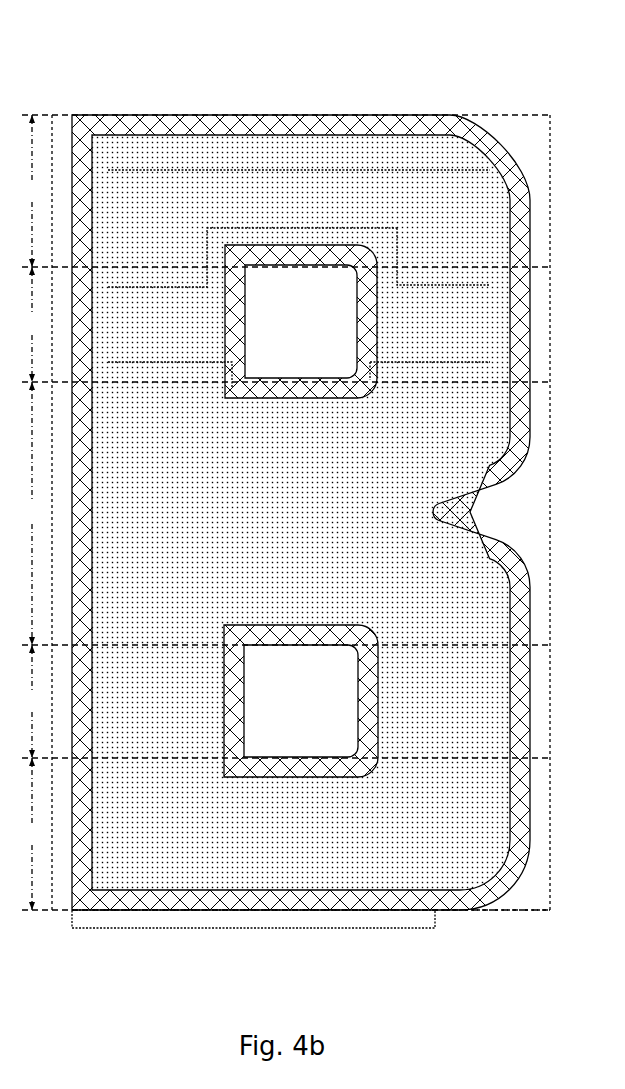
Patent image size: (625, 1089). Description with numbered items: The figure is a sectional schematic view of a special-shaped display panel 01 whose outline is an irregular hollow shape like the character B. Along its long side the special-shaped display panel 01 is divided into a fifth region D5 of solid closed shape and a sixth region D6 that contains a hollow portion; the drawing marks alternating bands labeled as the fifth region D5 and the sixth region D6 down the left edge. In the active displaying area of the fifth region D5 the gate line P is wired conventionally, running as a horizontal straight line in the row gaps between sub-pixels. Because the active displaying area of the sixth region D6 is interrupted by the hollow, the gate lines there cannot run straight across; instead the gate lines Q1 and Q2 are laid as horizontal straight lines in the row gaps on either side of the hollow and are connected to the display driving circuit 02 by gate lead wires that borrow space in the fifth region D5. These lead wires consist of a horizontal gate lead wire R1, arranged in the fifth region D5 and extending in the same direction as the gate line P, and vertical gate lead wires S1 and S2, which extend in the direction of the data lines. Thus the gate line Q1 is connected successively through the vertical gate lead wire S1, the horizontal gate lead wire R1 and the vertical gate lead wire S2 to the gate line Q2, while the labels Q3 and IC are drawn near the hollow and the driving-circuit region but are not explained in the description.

The special-shaped display panel 01 is at (306, 114).
The display driving circuit 02 is at (398, 930).
The gate line P is at (310, 168).
The gate line Q1 is at (158, 290).
The gate line Q2 is at (446, 290).
The region Q3 is at (236, 228).
The horizontal gate lead wire R1 is at (322, 226).
The vertical gate lead wire S1 is at (205, 250).
The vertical gate lead wire S2 is at (415, 266).
The integrated circuit IC is at (253, 919).
The fifth region D5 is at (286, 512).
The sixth region D6 is at (34, 512).